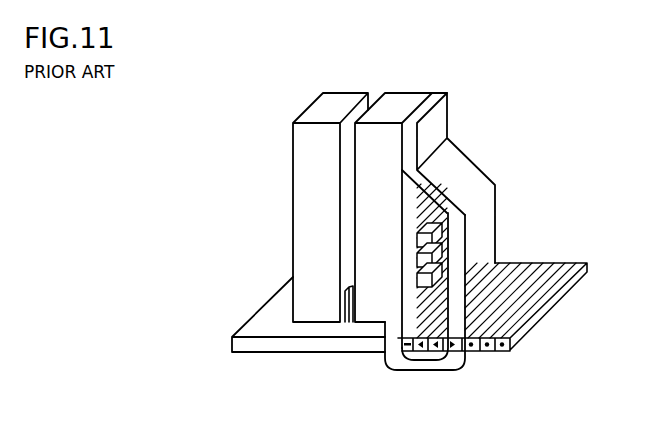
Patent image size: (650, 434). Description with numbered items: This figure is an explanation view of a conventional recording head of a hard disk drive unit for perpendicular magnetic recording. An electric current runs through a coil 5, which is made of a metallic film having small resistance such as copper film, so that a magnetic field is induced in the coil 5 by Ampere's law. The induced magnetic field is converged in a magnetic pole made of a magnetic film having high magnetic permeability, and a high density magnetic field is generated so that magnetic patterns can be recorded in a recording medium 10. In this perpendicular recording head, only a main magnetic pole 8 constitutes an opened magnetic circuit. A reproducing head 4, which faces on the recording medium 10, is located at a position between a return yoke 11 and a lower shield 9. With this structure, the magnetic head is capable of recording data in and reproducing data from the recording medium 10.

The reproducing head 4 is at (343, 317).
The coil 5 is at (450, 203).
The main magnetic pole 8 is at (438, 118).
The lower shield 9 is at (298, 153).
The recording medium 10 is at (267, 348).
The return yoke 11 is at (380, 133).